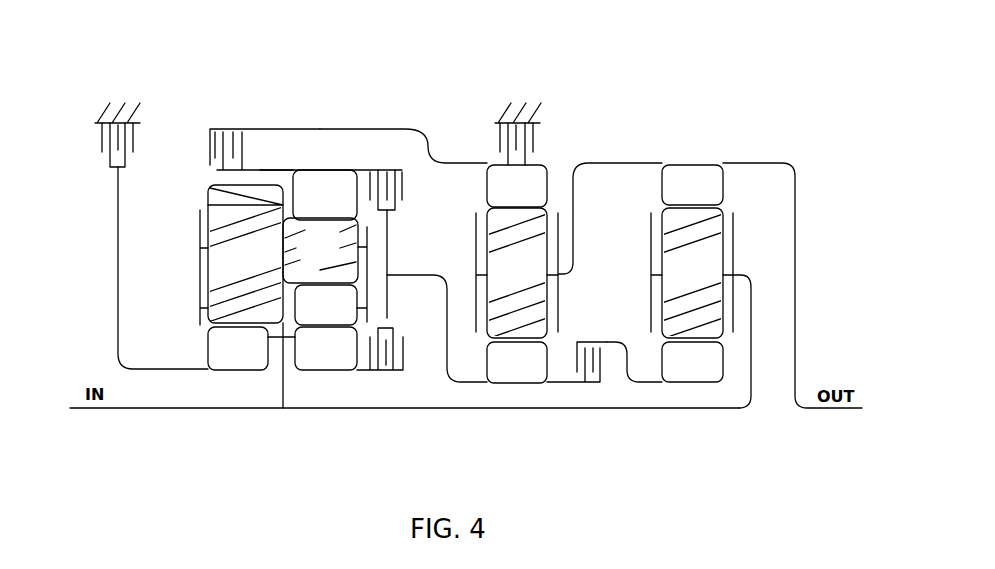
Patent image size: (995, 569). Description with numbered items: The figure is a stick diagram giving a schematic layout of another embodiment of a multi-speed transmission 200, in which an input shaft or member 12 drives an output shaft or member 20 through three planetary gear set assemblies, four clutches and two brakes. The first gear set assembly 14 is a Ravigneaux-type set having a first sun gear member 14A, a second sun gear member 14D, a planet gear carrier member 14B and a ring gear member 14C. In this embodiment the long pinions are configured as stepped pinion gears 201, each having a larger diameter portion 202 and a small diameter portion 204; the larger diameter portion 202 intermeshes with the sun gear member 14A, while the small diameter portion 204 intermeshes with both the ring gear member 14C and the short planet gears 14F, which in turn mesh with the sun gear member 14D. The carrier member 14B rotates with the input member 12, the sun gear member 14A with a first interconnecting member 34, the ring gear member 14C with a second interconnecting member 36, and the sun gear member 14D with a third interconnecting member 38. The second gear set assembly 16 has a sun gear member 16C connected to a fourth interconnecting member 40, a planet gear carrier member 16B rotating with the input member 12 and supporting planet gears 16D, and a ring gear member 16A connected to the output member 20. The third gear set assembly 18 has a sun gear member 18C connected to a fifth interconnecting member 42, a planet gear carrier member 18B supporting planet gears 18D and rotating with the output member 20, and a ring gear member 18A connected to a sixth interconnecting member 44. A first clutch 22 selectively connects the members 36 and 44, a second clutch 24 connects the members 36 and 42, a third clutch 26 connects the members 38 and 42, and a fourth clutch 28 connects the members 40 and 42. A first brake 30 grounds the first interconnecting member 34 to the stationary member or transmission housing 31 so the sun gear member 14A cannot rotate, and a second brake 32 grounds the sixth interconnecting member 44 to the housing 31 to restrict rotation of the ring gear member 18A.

The multi-speed transmission 200 is at (767, 67).
The stationary member or transmission housing 31 is at (104, 114).
The first brake 30 is at (100, 140).
The second brake 32 is at (498, 140).
The first shaft or interconnecting member 34 is at (116, 248).
The first clutch 22 is at (208, 143).
The sixth shaft or interconnecting member 44 is at (315, 129).
The second shaft or interconnecting member 36 is at (260, 170).
The ring gear member 14C is at (325, 195).
The stepped pinion gear 201 is at (212, 186).
The larger diameter portion 202 is at (245, 254).
The small diameter portion 204 is at (360, 217).
The short planet or pinion gears 14F is at (326, 305).
The second sun gear member 14D is at (326, 348).
The first sun gear member 14A is at (238, 348).
The planet gear carrier member 14B is at (199, 285).
The first gear set assembly 14 is at (215, 380).
The input shaft or member 12 is at (94, 412).
The second clutch 24 is at (402, 178).
The third shaft or interconnecting member 38 is at (363, 370).
The third clutch 26 is at (403, 360).
The fifth shaft or interconnecting member 42 is at (400, 275).
The ring gear member 18A is at (517, 186).
The planet or pinion gears 18D is at (517, 273).
The sun gear member 18C is at (517, 362).
The planet gear carrier member 18B is at (475, 262).
The third gear set assembly 18 is at (525, 398).
The fourth clutch 28 is at (607, 380).
The fourth shaft or interconnecting member 40 is at (595, 342).
The ring gear member 16A is at (692, 185).
The planet or pinion gears 16D is at (692, 273).
The sun gear member 16C is at (692, 362).
The planet gear carrier member 16B is at (733, 257).
The second gear set assembly 16 is at (691, 400).
The output shaft or member 20 is at (834, 412).